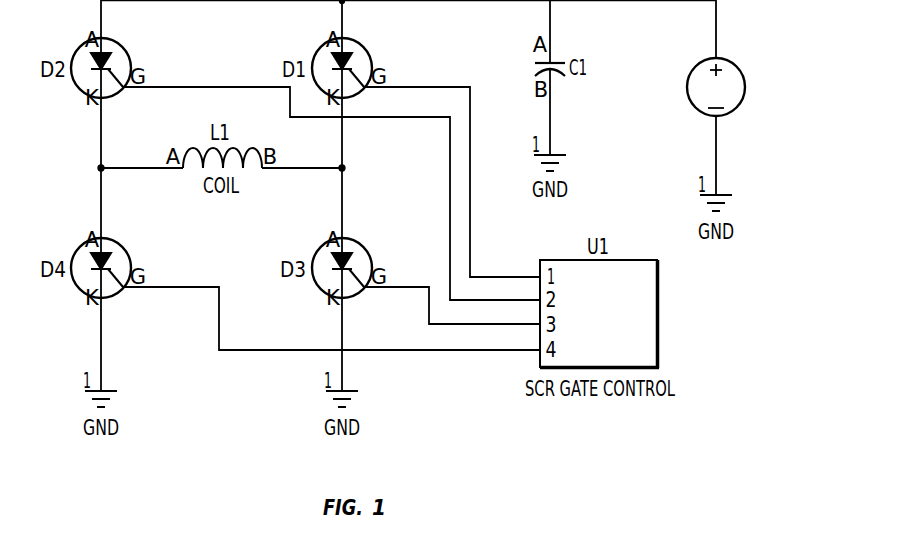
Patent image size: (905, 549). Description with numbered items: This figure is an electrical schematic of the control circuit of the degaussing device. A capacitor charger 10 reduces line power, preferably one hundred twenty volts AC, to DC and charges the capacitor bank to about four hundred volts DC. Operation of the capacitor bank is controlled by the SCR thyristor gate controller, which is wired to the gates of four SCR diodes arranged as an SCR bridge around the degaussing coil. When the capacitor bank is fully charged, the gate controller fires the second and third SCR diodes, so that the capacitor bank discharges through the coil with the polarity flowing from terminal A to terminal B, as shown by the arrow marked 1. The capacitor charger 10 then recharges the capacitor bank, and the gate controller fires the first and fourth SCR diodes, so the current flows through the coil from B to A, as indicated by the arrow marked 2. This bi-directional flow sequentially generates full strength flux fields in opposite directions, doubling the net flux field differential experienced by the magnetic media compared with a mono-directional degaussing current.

The capacitor charger 10 is at (735, 111).
The first current direction 1 is at (247, 210).
The second current direction 2 is at (192, 114).